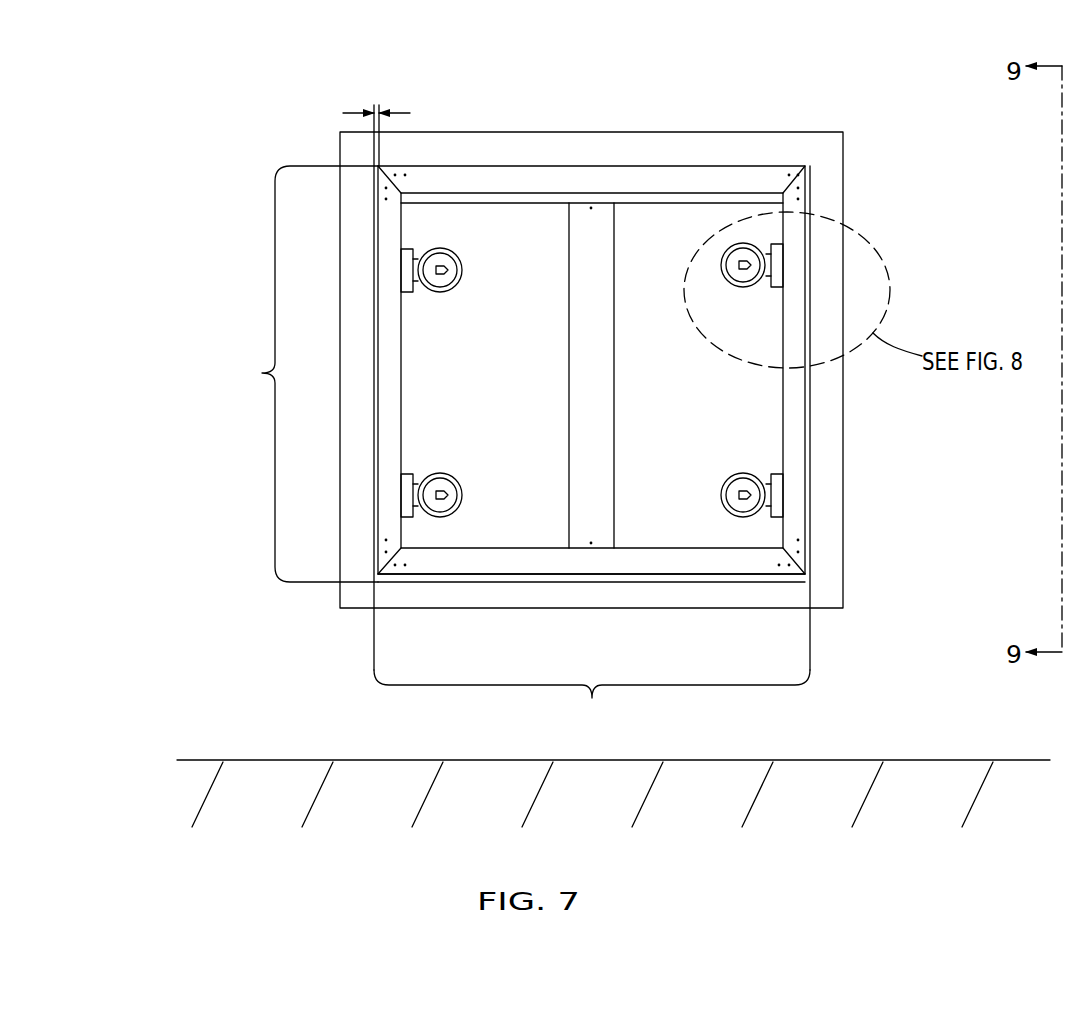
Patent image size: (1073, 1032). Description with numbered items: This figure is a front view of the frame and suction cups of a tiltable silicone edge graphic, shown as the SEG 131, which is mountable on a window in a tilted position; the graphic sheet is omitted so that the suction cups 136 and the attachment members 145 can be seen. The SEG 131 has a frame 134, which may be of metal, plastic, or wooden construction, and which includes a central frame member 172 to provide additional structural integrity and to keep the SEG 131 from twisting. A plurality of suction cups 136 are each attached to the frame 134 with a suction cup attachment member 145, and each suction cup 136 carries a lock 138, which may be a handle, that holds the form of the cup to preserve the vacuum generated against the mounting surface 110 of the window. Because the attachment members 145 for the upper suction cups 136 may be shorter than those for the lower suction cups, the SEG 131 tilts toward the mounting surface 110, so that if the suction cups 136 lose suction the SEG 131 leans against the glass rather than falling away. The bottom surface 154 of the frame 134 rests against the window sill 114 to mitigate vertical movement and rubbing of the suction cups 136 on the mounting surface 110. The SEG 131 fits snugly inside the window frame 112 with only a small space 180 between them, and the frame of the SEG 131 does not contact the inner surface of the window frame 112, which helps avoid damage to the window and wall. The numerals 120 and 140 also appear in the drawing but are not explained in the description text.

The mounting surface 110 is at (763, 392).
The window frame 112 is at (535, 135).
The window sill 114 is at (592, 708).
The ground surface 120 is at (830, 757).
The SEG 131 is at (296, 374).
The frame 134 is at (597, 178).
The suction cup 136 is at (462, 283).
The lock 138 is at (447, 269).
The sliding door assembly 140 is at (905, 94).
The suction cup attachment member 145 is at (413, 297).
The bottom surface 154 is at (600, 582).
The central frame member 172 is at (597, 405).
The space 180 is at (375, 105).